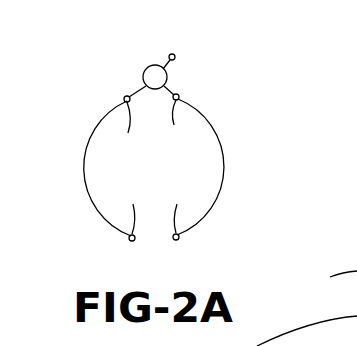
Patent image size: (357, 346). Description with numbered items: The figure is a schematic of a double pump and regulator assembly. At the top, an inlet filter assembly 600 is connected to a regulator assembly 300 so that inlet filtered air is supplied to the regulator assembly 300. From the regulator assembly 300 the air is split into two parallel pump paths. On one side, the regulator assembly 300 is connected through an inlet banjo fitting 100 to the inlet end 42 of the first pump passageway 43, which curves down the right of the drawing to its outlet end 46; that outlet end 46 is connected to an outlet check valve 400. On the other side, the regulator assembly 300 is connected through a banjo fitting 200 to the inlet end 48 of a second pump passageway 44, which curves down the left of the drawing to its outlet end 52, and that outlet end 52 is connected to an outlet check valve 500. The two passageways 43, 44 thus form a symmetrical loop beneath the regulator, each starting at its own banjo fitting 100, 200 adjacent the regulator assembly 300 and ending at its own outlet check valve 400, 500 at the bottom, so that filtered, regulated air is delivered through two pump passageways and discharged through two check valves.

The regulator assembly 300 is at (146, 68).
The inlet filter assembly 600 is at (175, 55).
The inlet banjo fitting 100 is at (179, 95).
The banjo fitting 200 is at (124, 97).
The outlet check valve 400 is at (130, 241).
The outlet check valve 500 is at (178, 240).
The second pump passageway 44 is at (82, 180).
The first pump passageway 43 is at (228, 176).
The inlet end 48 is at (127, 131).
The inlet end 42 is at (176, 129).
The outlet end 52 is at (134, 207).
The outlet end 46 is at (177, 206).